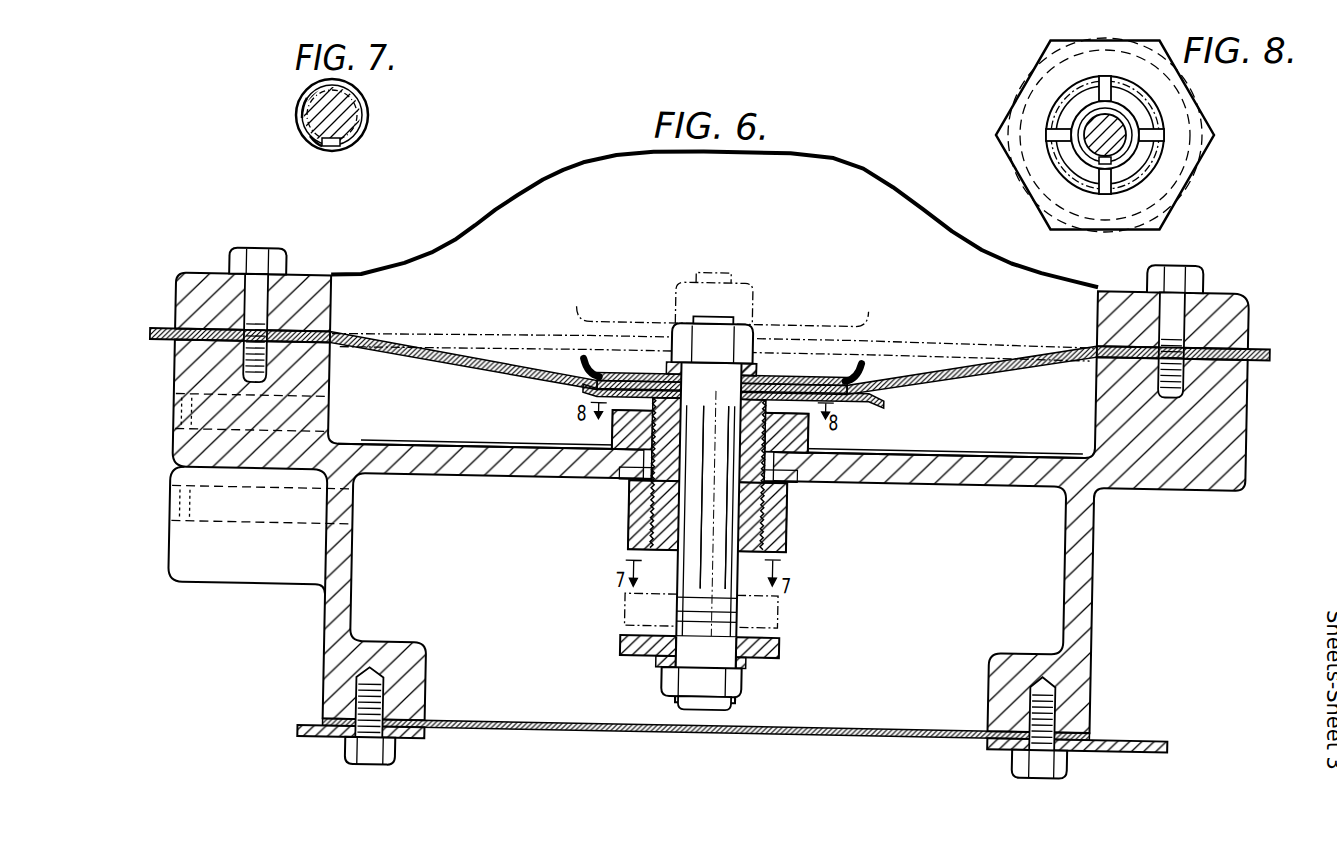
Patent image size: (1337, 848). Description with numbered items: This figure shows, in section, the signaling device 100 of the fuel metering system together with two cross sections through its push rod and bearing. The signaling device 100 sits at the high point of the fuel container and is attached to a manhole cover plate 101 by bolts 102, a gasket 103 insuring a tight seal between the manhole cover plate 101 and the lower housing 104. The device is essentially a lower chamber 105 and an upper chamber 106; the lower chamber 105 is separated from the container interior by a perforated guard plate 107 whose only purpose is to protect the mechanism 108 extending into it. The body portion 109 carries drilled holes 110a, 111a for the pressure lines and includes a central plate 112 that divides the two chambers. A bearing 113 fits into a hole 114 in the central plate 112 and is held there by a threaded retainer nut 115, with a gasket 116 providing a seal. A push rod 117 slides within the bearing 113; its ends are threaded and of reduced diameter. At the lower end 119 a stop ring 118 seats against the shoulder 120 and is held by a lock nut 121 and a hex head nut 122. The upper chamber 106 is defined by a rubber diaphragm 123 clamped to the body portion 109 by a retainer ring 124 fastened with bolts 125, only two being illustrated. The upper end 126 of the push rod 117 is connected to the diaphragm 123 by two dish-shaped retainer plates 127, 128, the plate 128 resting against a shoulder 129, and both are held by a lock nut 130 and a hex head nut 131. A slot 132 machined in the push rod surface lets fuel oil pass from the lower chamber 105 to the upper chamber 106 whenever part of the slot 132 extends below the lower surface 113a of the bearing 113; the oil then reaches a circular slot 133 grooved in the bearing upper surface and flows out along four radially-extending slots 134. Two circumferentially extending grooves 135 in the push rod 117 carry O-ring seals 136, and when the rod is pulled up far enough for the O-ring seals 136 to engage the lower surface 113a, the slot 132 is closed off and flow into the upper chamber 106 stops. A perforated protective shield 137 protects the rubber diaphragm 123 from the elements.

In FIG. 6, the signaling device 100 is at (1130, 567).
In FIG. 6, the manhole cover plate 101 is at (307, 725).
In FIG. 6, the bolts 102 is at (402, 752).
In FIG. 6, the gasket 103 is at (420, 728).
In FIG. 6, the lower housing 104 is at (430, 645).
In FIG. 6, the lower chamber 105 is at (945, 589).
In FIG. 6, the upper chamber 106 is at (1035, 413).
In FIG. 6, the perforated guard plate 107 is at (895, 715).
In FIG. 6, the mechanism 108 is at (787, 640).
In FIG. 6, the body portion 109 is at (1097, 520).
In FIG. 6, the drilled hole 110a is at (266, 530).
In FIG. 6, the drilled hole 111a is at (272, 404).
In FIG. 6, the central plate 112 is at (490, 470).
In FIG. 6, the bearing 113 is at (622, 412).
In FIG. 8, the bearing 113 is at (1040, 205).
In FIG. 6, the lower surface of bearing 113a is at (790, 542).
In FIG. 6, the hole 114 is at (628, 470).
In FIG. 6, the retainer nut 115 is at (810, 425).
In FIG. 8, the retainer nut 115 is at (1160, 222).
In FIG. 6, the gasket 116 is at (797, 471).
In FIG. 8, the gasket 116 is at (1200, 163).
In FIG. 6, the push rod 117 is at (745, 580).
In FIG. 7, the push rod 117 is at (365, 108).
In FIG. 8, the push rod 117 is at (1135, 152).
In FIG. 6, the stop ring 118 is at (626, 638).
In FIG. 6, the lower end of push rod 119 is at (738, 692).
In FIG. 6, the shoulder 120 is at (664, 652).
In FIG. 6, the lock nut 121 is at (752, 652).
In FIG. 6, the hex head nut 122 is at (668, 676).
In FIG. 6, the rubber diaphragm 123 is at (458, 352).
In FIG. 6, the retainer ring 124 is at (205, 272).
In FIG. 6, the bolts 125 is at (282, 256).
In FIG. 6, the upper end of push rod 126 is at (735, 318).
In FIG. 8, the upper end of push rod 126 is at (1085, 130).
In FIG. 6, the retainer plate 127 is at (852, 355).
In FIG. 6, the retainer plate 128 is at (882, 390).
In FIG. 6, the shoulder 129 is at (757, 358).
In FIG. 6, the lock nut 130 is at (667, 358).
In FIG. 6, the hex head nut 131 is at (752, 330).
In FIG. 6, the slot 132 is at (700, 513).
In FIG. 7, the slot 132 is at (336, 148).
In FIG. 8, the slot 132 is at (1104, 167).
In FIG. 8, the circular slot 133 is at (1088, 92).
In FIG. 8, the radially-extending slots 134 is at (1112, 84).
In FIG. 6, the circumferentially extending grooves 135 is at (680, 605).
In FIG. 7, the circumferentially extending grooves 135 is at (305, 140).
In FIG. 6, the O-ring seals 136 is at (744, 607).
In FIG. 7, the O-ring seals 136 is at (300, 118).
In FIG. 6, the perforated protective shield 137 is at (560, 168).